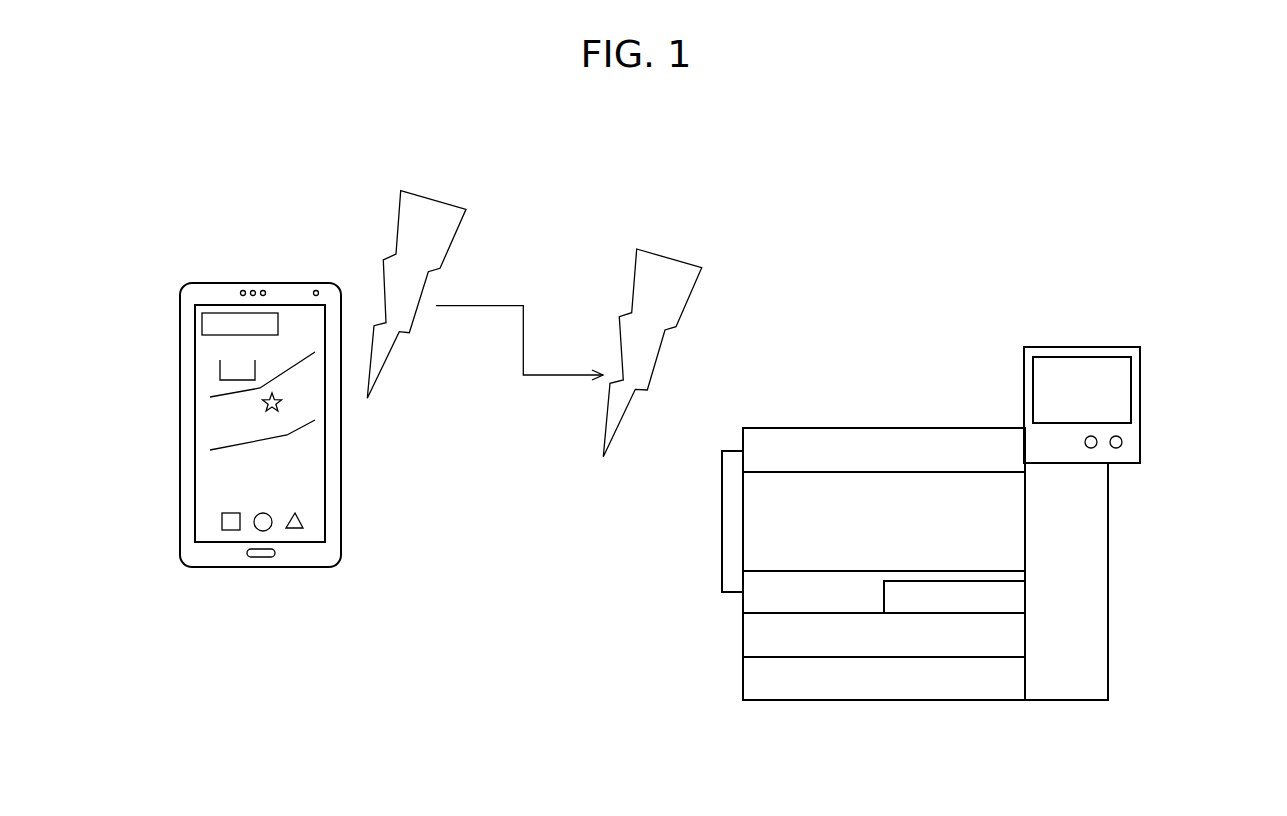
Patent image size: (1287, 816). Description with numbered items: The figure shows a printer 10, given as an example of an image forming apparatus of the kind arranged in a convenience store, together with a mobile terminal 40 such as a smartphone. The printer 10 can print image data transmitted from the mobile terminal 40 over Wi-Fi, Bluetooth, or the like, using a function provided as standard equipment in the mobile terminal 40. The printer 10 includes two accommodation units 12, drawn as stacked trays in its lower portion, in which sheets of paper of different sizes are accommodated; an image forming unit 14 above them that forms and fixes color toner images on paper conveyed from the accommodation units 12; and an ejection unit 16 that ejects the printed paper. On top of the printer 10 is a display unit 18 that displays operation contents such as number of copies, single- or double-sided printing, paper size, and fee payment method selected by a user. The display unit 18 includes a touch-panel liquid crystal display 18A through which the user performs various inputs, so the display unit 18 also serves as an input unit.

The printer 10 is at (920, 508).
The accommodation unit 12 is at (763, 628).
The image forming unit 14 is at (783, 513).
The ejection unit 16 is at (905, 610).
The display unit 18 is at (1123, 358).
The display 18A is at (1105, 394).
The mobile terminal 40 is at (277, 270).